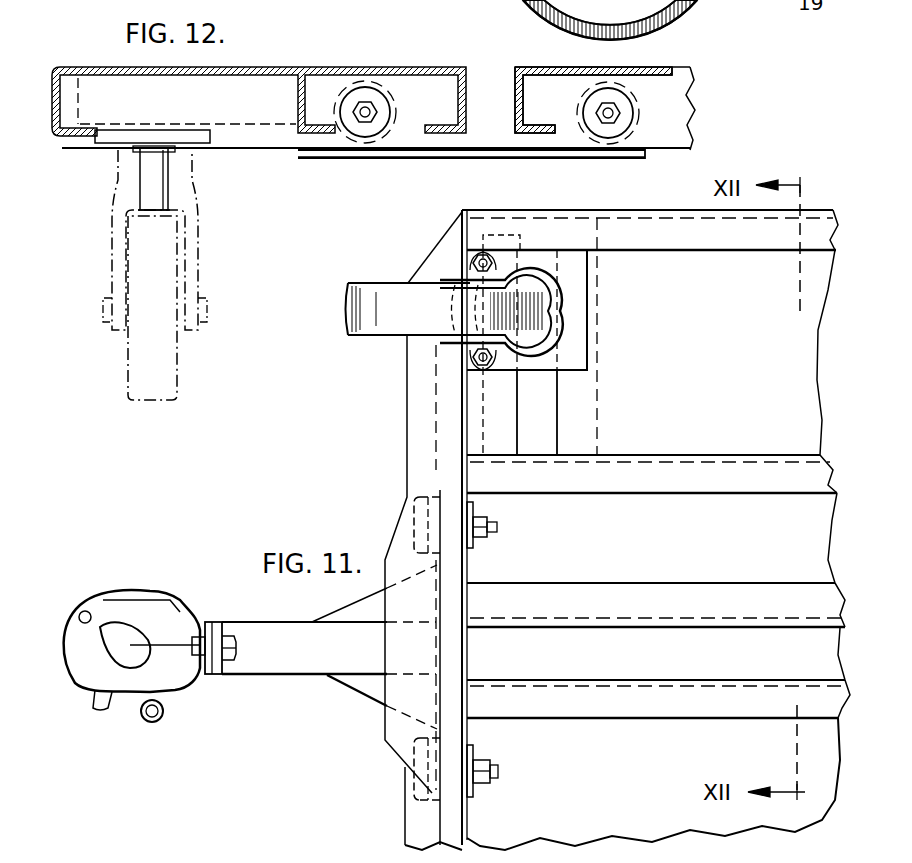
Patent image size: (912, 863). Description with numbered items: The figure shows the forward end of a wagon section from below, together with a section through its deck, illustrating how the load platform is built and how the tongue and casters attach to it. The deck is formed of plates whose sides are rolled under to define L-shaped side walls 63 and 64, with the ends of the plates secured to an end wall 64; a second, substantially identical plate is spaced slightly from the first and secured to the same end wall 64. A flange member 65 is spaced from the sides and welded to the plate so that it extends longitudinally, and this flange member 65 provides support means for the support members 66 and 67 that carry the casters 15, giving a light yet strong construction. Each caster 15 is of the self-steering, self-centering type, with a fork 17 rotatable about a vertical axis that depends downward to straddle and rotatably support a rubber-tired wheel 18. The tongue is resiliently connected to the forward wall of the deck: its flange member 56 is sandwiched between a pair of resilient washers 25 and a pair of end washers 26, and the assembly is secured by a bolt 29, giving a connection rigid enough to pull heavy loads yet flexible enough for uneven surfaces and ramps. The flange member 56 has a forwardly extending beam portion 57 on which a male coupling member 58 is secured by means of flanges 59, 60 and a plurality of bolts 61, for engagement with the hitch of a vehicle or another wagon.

In FIG. 12, the casters 15 is at (204, 361).
In FIG. 12, the fork 17 is at (187, 276).
In FIG. 12, the rubber-tired wheel 18 is at (128, 357).
In FIG. 11, the rubber-tired wheel 18 is at (363, 287).
In FIG. 11, the resilient washers 25 is at (430, 496).
In FIG. 11, the end washers 26 is at (470, 545).
In FIG. 12, the bolt 29 is at (372, 112).
In FIG. 11, the bolt 29 is at (497, 527).
In FIG. 11, the flange member 56 is at (406, 548).
In FIG. 11, the beam portion 57 is at (264, 672).
In FIG. 11, the coupling member 58 is at (122, 592).
In FIG. 11, the flange 59 is at (220, 622).
In FIG. 11, the flange 60 is at (212, 674).
In FIG. 11, the bolts 61 is at (237, 648).
In FIG. 12, the L-shaped side wall 63 is at (55, 128).
In FIG. 11, the L-shaped side wall 63 is at (668, 238).
In FIG. 12, the L-shaped side wall / end wall 64 is at (464, 128).
In FIG. 11, the L-shaped side wall / end wall 64 is at (710, 592).
In FIG. 12, the flange member 65 is at (308, 130).
In FIG. 11, the flange member 65 is at (692, 478).
In FIG. 11, the support member 66 is at (503, 445).
In FIG. 11, the support member 67 is at (578, 438).